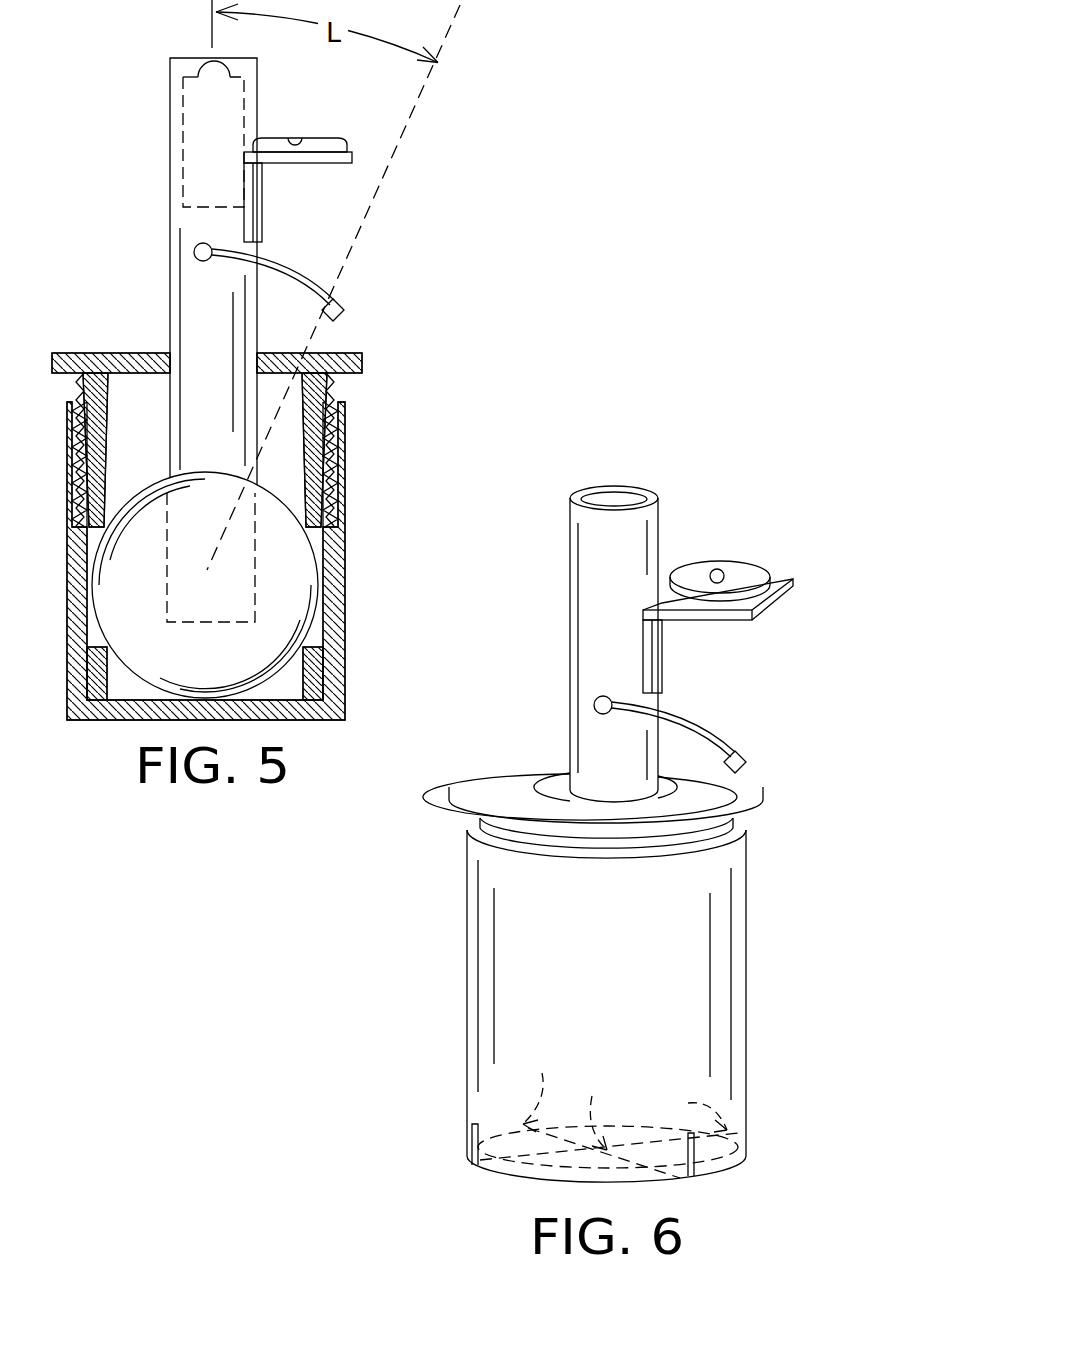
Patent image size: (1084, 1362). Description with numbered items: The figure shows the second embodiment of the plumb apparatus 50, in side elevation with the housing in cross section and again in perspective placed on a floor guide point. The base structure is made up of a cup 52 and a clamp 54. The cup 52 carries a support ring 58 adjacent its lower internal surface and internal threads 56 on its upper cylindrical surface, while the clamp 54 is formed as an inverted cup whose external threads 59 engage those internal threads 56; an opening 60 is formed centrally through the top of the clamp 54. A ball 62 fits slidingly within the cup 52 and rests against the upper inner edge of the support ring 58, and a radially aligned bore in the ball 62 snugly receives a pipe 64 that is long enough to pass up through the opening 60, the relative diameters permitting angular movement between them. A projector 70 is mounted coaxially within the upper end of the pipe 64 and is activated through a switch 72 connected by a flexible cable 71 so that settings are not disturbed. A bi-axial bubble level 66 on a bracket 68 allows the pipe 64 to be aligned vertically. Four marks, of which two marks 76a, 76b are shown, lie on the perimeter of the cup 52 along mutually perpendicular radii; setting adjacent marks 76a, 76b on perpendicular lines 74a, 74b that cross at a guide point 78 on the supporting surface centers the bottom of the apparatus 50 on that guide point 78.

In FIG. 5, the plumb apparatus 50 is at (418, 436).
In FIG. 6, the plumb apparatus 50 is at (450, 910).
In FIG. 5, the cup 52 is at (350, 597).
In FIG. 6, the cup 52 is at (478, 998).
In FIG. 5, the clamp 54 is at (340, 356).
In FIG. 6, the clamp 54 is at (755, 803).
In FIG. 5, the threads 56 is at (342, 493).
In FIG. 5, the support ring 58 is at (325, 640).
In FIG. 5, the external threads 59 is at (332, 400).
In FIG. 5, the opening 60 is at (267, 365).
In FIG. 6, the opening 60 is at (562, 786).
In FIG. 5, the ball 62 is at (293, 552).
In FIG. 5, the pipe 64 is at (182, 300).
In FIG. 6, the pipe 64 is at (583, 573).
In FIG. 5, the bi-axial bubble level 66 is at (313, 138).
In FIG. 6, the bi-axial bubble level 66 is at (735, 562).
In FIG. 5, the bracket 68 is at (276, 170).
In FIG. 6, the bracket 68 is at (770, 608).
In FIG. 5, the projector 70 is at (170, 96).
In FIG. 5, the flexible cable 71 is at (268, 258).
In FIG. 5, the switch 72 is at (345, 305).
In FIG. 6, the switch 72 is at (746, 757).
In FIG. 6, the line 74a is at (549, 1089).
In FIG. 6, the line 74b is at (680, 1112).
In FIG. 6, the mark 76a is at (477, 1165).
In FIG. 6, the mark 76b is at (694, 1176).
In FIG. 6, the guide point 78 is at (611, 1106).